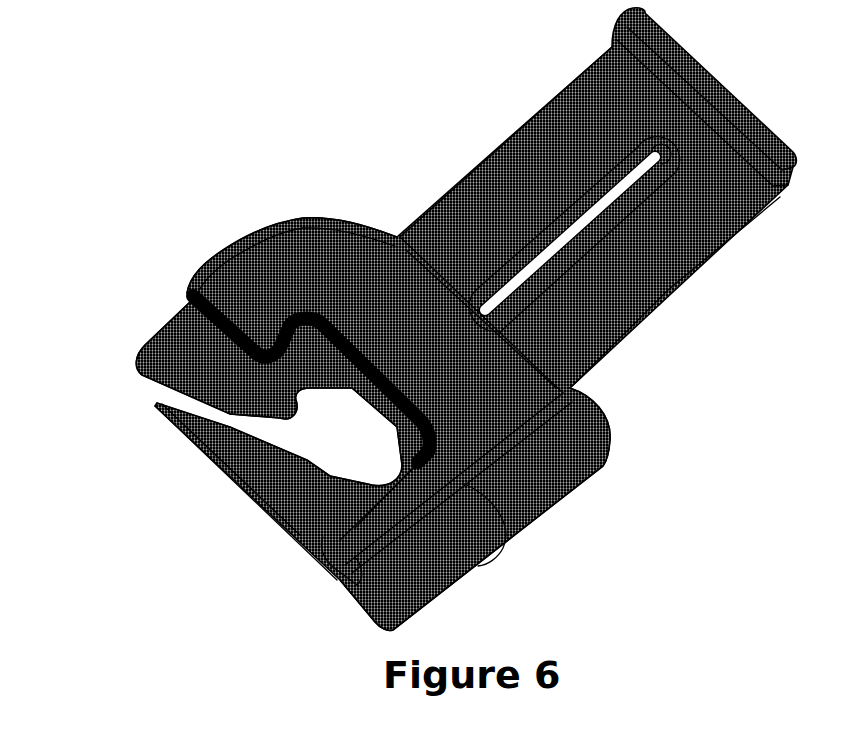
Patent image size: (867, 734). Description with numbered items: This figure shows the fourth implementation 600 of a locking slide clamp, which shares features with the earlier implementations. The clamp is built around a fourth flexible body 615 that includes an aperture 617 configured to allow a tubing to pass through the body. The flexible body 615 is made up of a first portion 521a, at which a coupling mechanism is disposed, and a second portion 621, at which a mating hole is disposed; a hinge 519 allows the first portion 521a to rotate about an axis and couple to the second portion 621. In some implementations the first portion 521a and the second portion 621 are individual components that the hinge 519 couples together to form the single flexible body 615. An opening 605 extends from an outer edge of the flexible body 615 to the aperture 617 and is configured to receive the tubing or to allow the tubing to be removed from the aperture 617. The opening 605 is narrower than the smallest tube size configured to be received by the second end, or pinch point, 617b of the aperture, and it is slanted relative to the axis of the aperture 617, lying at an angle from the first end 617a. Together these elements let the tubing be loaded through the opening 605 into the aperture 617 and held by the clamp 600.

The fourth implementation of the locking slide clamp 600 is at (202, 56).
The fourth flexible body 615 is at (617, 340).
The second end (pinch point) 617b is at (637, 156).
The first portion of the fourth flexible body 521a is at (270, 262).
The second portion of the fourth flexible body 621 is at (168, 352).
The opening 605 is at (145, 388).
The aperture 617 is at (330, 440).
The first end 617a is at (313, 473).
The hinge 519 is at (543, 493).